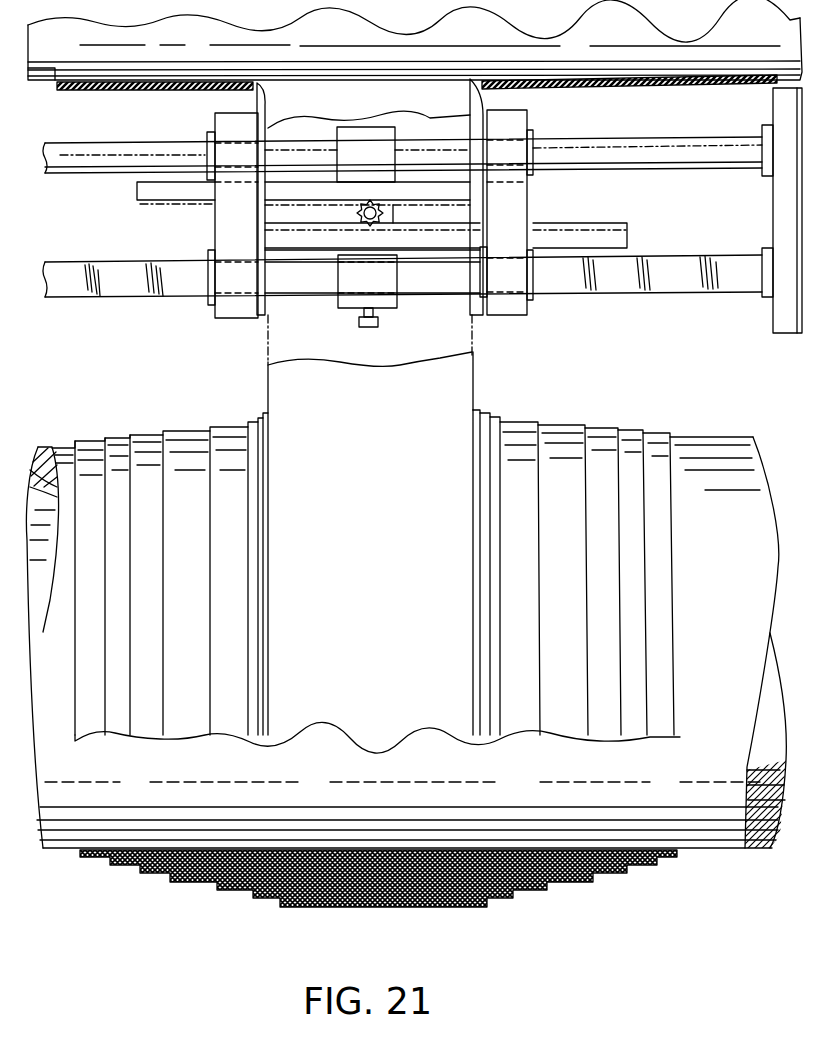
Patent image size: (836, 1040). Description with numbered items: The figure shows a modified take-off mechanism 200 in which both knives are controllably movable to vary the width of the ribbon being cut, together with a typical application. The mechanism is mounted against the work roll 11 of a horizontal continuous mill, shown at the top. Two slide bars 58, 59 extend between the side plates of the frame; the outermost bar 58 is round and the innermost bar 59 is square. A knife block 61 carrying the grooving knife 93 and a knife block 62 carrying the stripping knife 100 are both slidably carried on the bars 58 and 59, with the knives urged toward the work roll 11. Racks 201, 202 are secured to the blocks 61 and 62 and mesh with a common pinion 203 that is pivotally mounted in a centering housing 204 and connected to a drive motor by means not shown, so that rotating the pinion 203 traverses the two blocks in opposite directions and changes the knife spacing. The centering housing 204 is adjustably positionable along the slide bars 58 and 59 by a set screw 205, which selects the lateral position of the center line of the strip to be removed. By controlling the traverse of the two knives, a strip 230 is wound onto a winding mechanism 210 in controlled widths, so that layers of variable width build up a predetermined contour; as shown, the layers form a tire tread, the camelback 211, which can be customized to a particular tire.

The work roll 11 is at (55, 83).
The slide bar 58 is at (673, 157).
The slide bar 59 is at (690, 263).
The knife block 61 is at (225, 232).
The knife block 62 is at (520, 192).
The grooving knife 93 is at (255, 100).
The stripping knife 100 is at (483, 100).
The take-off mechanism 200 is at (380, 220).
The rack 201 is at (620, 241).
The rack 202 is at (145, 192).
The pinion 203 is at (372, 218).
The centering housing 204 is at (345, 283).
The set screw 205 is at (374, 327).
The winding mechanism 210 is at (744, 563).
The camelback 211 is at (524, 887).
The strip 230 is at (477, 375).